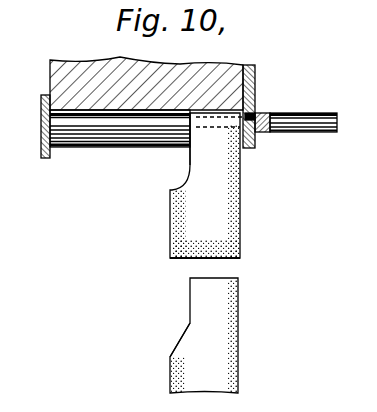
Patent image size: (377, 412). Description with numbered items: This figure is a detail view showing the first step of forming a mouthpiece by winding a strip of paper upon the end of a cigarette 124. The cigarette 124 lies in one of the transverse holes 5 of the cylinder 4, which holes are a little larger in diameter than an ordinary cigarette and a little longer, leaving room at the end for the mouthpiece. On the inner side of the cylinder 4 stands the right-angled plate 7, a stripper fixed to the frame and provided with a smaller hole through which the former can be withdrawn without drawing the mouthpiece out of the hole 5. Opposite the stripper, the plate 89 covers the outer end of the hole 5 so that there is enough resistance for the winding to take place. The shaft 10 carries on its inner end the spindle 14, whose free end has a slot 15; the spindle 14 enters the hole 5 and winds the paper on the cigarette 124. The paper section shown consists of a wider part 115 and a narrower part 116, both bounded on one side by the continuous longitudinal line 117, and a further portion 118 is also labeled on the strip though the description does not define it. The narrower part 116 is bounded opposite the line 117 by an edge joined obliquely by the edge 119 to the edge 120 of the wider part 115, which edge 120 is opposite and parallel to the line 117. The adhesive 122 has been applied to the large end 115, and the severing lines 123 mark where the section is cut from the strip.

The cylinder 4 is at (211, 62).
The transverse holes 5 is at (50, 119).
The right-angled plate 7 is at (255, 102).
The shaft 10 is at (311, 113).
The spindle 14 is at (258, 133).
The slot 15 is at (258, 112).
The plate 89 is at (44, 96).
The wider part 115 is at (205, 305).
The narrower part 116 is at (206, 253).
The continuous longitudinal line 117 is at (240, 211).
The neck 118 is at (190, 152).
The oblique edge 119 is at (185, 342).
The edge of wider part 120 is at (170, 206).
The adhesive 122 is at (176, 246).
The severing lines 123 is at (226, 258).
The cigarette 124 is at (120, 128).